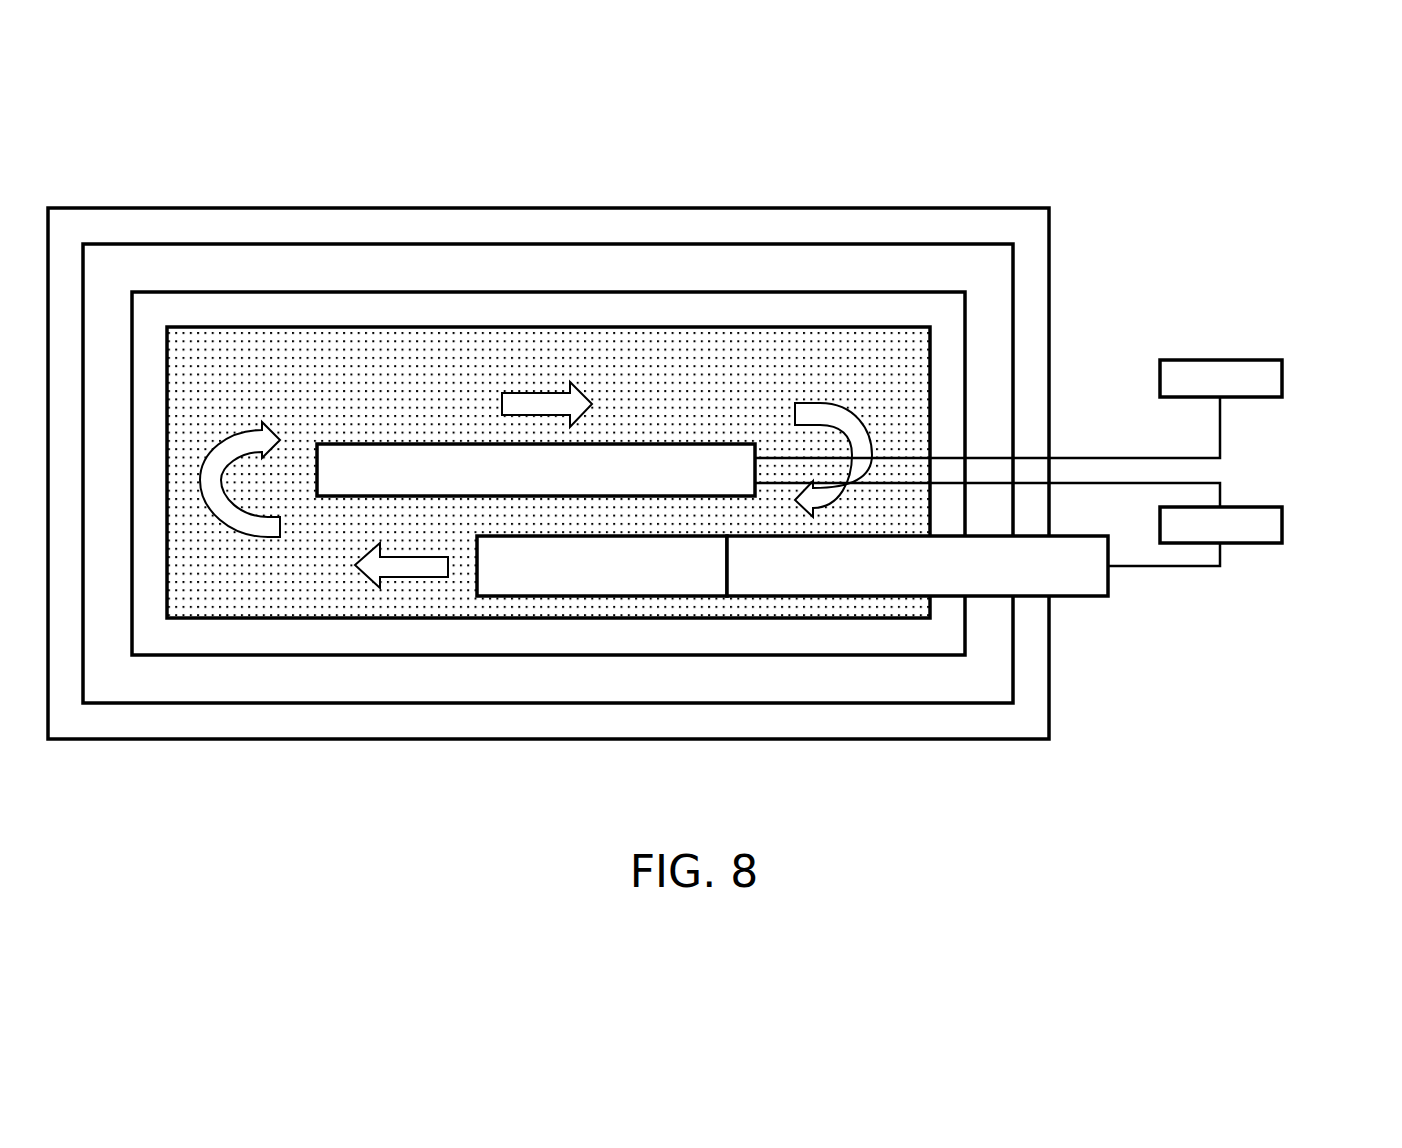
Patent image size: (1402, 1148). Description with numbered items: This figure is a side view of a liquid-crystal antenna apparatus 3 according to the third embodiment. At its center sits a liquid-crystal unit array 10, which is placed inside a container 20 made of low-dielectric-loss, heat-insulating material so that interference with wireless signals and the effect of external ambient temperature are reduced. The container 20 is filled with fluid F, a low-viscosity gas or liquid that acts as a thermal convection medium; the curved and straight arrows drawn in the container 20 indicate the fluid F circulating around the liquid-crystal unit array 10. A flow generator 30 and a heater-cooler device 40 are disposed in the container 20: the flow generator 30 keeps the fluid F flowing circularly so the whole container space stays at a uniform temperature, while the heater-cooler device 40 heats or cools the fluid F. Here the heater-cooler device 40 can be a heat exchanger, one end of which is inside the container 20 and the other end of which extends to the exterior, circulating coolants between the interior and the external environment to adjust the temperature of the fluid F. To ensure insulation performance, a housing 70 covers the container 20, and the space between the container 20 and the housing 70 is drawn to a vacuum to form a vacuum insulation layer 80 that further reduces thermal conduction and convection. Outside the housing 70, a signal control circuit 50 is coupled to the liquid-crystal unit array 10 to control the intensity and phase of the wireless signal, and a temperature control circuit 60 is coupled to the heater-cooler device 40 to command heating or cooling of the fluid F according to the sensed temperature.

The liquid-crystal antenna apparatus 3 is at (1323, 195).
The liquid-crystal unit array 10 is at (407, 460).
The container 20 is at (602, 311).
The flow generator 30 is at (603, 573).
The heater-cooler device 40 is at (828, 575).
The signal control circuit 50 is at (1220, 378).
The temperature control circuit 60 is at (1260, 524).
The housing 70 is at (965, 227).
The vacuum insulation layer 80 is at (828, 268).
The fluid F is at (244, 368).